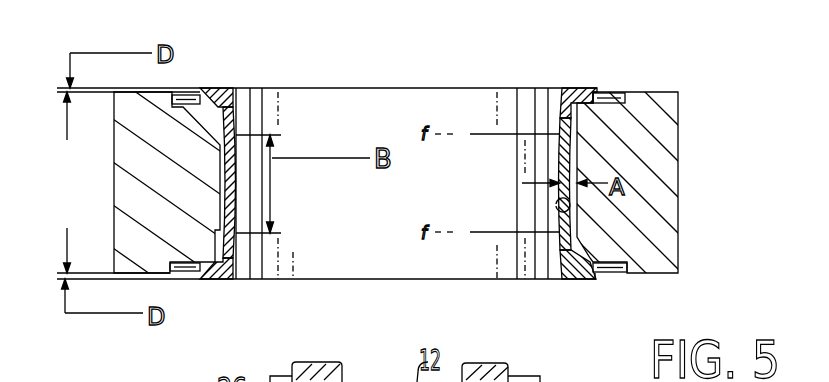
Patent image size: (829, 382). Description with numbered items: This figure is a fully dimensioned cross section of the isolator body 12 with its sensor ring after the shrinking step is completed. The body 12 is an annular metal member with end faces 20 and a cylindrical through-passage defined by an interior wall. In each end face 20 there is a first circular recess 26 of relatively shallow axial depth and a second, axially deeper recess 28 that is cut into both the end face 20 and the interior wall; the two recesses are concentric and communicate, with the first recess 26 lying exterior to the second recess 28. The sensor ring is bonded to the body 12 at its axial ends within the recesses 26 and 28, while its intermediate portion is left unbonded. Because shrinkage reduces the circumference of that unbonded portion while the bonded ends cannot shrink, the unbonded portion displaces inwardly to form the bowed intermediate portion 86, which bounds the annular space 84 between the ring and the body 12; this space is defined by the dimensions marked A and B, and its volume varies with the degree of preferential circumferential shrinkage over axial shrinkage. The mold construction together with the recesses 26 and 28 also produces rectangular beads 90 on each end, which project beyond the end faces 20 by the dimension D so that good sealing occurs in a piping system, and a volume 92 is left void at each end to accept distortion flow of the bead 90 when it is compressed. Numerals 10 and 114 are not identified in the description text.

The roller bearing assembly 10 is at (394, 380).
The body 12 is at (660, 92).
The end faces 20 is at (676, 92).
The first circular recess 26 is at (601, 262).
The second recess 28 is at (572, 240).
The annular space 84 is at (565, 160).
The bowed intermediate portion 86 is at (572, 213).
The rectangular beads 90 is at (585, 88).
The volume 92 is at (610, 92).
The cage lip 114 is at (562, 88).